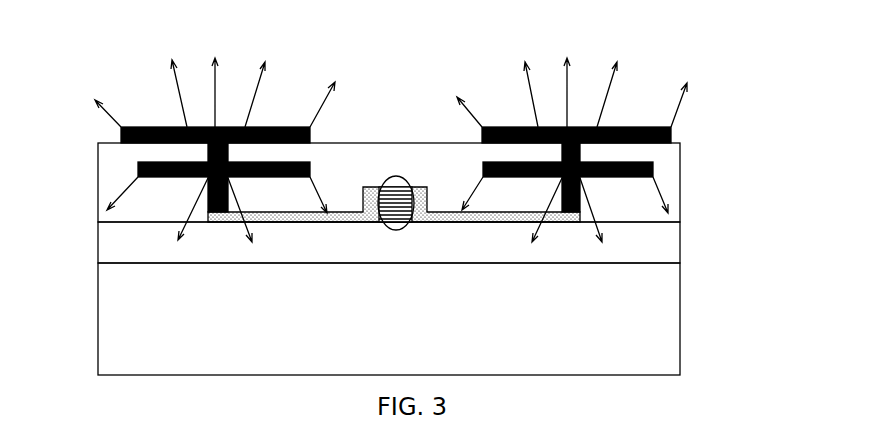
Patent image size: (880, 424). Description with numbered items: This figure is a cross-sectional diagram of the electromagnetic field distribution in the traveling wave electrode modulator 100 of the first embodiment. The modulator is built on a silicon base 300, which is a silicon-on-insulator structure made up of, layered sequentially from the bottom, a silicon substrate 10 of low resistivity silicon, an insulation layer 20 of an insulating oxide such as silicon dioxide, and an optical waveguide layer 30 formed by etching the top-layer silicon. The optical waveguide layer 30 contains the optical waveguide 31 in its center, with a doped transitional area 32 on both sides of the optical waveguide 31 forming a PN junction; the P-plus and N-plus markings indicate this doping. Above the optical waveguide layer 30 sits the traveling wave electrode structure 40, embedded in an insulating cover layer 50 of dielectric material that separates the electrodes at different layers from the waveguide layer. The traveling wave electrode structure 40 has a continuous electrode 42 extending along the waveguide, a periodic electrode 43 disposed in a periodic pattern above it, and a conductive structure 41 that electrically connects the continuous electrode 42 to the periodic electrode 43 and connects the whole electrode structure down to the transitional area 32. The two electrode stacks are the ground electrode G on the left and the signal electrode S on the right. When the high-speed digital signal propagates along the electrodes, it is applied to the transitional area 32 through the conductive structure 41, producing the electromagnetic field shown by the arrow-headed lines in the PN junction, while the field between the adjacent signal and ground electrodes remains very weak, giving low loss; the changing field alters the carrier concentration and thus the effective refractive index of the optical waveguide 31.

The traveling wave electrode modulator 100 is at (260, 35).
The silicon base 300 is at (740, 193).
The silicon substrate 10 is at (650, 327).
The insulation layer 20 is at (667, 248).
The optical waveguide layer 30 is at (407, 92).
The optical waveguide 31 is at (408, 192).
The transitional area 32 is at (352, 212).
The traveling wave electrode structure 40 is at (93, 83).
The conductive structure 41 is at (208, 192).
The continuous electrode 42 is at (137, 167).
The periodic electrode 43 is at (153, 127).
The cover layer 50 is at (665, 175).